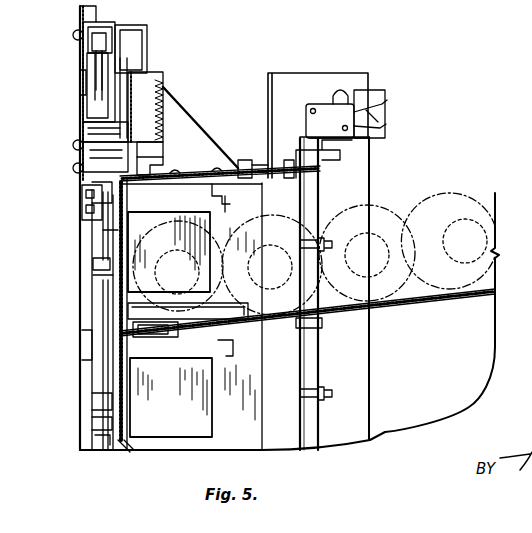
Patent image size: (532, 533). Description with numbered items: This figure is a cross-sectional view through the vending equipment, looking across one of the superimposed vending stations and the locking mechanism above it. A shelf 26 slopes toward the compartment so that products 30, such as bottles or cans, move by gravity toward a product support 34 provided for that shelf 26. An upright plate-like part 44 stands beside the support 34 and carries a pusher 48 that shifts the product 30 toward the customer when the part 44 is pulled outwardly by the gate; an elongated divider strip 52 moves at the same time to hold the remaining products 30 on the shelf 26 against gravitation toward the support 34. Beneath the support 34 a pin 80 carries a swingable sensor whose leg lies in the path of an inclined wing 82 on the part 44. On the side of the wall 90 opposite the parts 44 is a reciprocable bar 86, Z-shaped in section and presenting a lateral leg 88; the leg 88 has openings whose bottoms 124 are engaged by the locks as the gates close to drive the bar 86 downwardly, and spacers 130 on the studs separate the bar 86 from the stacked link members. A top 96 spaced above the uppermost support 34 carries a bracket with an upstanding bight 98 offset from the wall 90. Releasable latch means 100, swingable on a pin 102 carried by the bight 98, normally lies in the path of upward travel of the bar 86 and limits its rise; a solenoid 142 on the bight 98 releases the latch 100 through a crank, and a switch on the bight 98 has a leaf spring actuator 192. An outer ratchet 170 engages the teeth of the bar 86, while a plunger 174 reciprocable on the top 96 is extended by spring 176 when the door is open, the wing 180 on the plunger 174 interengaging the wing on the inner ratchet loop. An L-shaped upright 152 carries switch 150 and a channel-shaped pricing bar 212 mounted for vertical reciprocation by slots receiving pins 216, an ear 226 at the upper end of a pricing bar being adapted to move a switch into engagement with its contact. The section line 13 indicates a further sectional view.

The section line 13- 13 is at (150, 300).
The shelf 26 is at (415, 303).
The product 30 is at (469, 198).
The product support 34 is at (283, 310).
The plate-like part 44 is at (130, 258).
The pusher 48 is at (207, 225).
The divider strip 52 is at (220, 197).
The pin 80 is at (175, 333).
The inclined wing 82 is at (132, 453).
The reciprocable device 86 is at (75, 182).
The leg or lateral extension 88 is at (97, 372).
The wall 90 is at (117, 230).
The top 96 is at (262, 167).
The upstanding bight 98 is at (77, 80).
The releasable latch means 100 is at (108, 22).
The pin 102 is at (74, 34).
The bottoms of openings 124 is at (102, 298).
The spacer 130 is at (98, 270).
The solenoid 142 is at (137, 53).
The switch 150 is at (370, 90).
The L-shaped upright 152 is at (293, 75).
The outer ratchet 170 is at (77, 128).
The plunger 174 is at (155, 165).
The spring 176 is at (163, 97).
The wing 180 is at (165, 147).
The leaf spring actuator 192 is at (105, 60).
The pricing bar 212 is at (320, 353).
The pin 216 is at (327, 238).
The ear 226 is at (293, 152).